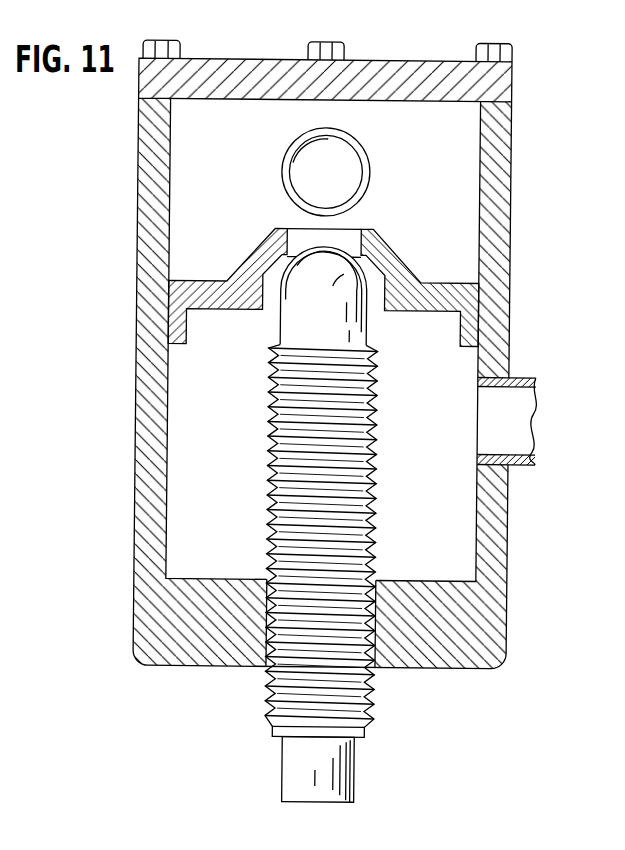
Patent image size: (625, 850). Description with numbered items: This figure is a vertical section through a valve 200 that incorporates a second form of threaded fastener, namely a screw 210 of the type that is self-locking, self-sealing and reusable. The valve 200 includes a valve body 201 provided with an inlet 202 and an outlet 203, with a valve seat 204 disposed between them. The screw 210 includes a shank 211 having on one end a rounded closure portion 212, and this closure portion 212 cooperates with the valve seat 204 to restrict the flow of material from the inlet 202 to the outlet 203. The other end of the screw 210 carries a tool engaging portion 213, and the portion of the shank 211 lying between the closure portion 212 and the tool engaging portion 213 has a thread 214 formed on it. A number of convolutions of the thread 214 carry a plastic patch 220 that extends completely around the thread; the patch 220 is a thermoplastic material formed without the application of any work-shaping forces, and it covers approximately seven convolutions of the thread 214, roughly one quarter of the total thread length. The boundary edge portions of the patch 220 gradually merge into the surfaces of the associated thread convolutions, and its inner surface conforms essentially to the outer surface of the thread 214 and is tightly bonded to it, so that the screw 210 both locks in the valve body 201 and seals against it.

The valve 200 is at (131, 158).
The valve body 201 is at (156, 352).
The inlet 202 is at (340, 148).
The outlet 203 is at (522, 389).
The valve seat 204 is at (300, 234).
The screw 210 is at (260, 471).
The shank 211 is at (317, 329).
The rounded closure portion 212 is at (350, 285).
The tool engaging portion 213 is at (333, 775).
The thread 214 is at (279, 707).
The plastic patch 220 is at (259, 566).